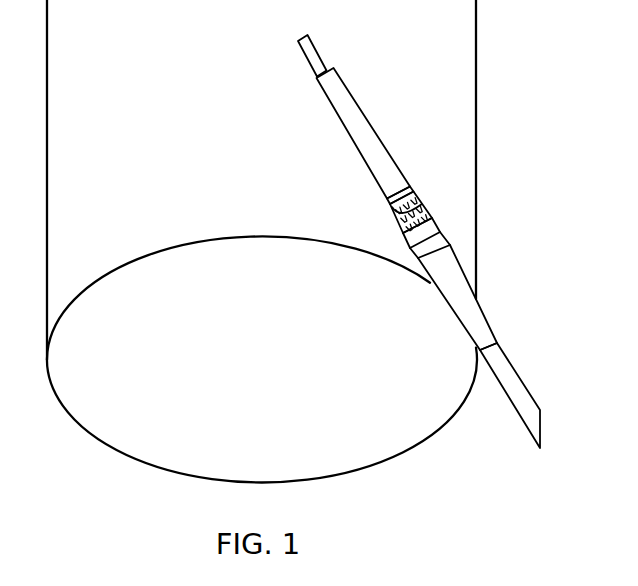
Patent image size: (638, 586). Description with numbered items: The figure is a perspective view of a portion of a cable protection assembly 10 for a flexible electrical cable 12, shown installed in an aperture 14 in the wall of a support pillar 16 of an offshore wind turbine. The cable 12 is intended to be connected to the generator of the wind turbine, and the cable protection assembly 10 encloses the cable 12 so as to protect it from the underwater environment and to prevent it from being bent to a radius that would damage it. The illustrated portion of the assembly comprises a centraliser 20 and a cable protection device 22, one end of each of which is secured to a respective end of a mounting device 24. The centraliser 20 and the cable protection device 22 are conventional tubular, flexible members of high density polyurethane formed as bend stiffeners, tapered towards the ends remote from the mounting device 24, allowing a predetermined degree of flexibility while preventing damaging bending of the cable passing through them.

The cable protection assembly 10 is at (431, 240).
The flexible electrical cable 12 is at (315, 57).
The aperture 14 is at (460, 197).
The support pillar 16 is at (477, 123).
The centraliser 20 is at (363, 143).
The cable protection device 22 is at (452, 270).
The mounting device 24 is at (441, 215).